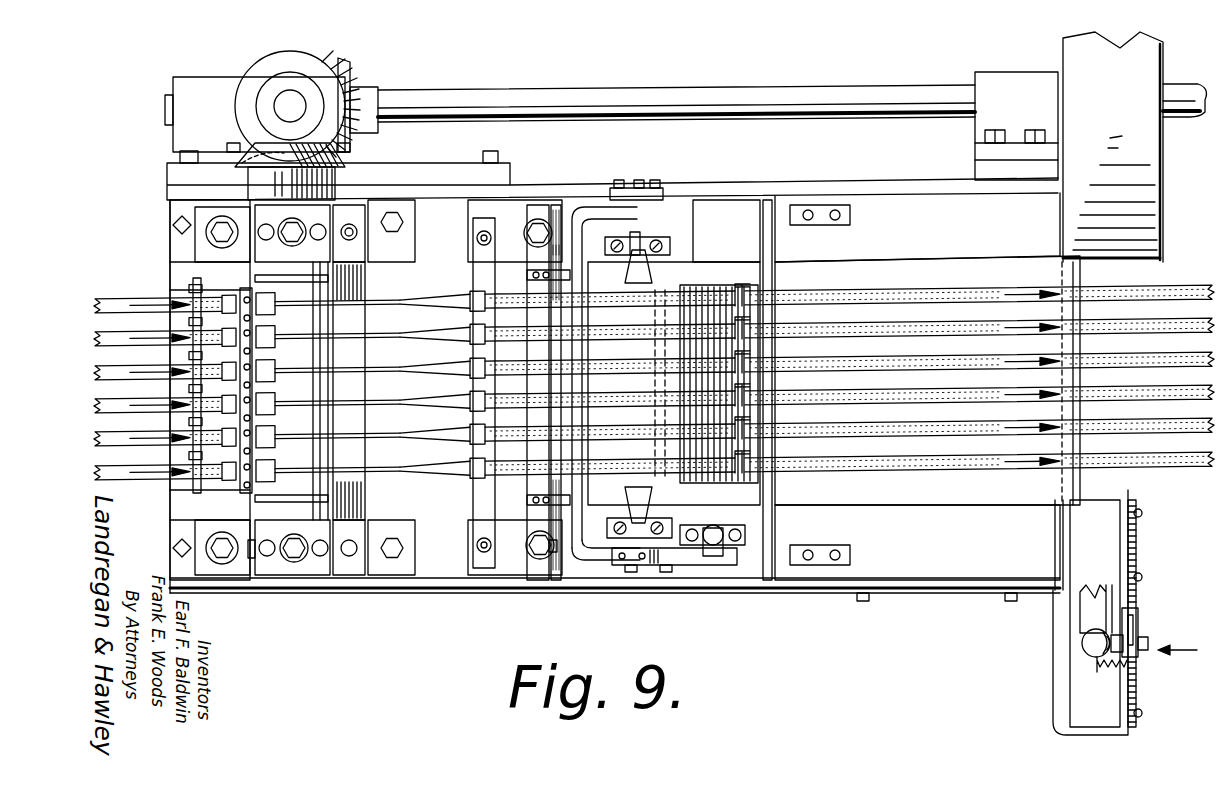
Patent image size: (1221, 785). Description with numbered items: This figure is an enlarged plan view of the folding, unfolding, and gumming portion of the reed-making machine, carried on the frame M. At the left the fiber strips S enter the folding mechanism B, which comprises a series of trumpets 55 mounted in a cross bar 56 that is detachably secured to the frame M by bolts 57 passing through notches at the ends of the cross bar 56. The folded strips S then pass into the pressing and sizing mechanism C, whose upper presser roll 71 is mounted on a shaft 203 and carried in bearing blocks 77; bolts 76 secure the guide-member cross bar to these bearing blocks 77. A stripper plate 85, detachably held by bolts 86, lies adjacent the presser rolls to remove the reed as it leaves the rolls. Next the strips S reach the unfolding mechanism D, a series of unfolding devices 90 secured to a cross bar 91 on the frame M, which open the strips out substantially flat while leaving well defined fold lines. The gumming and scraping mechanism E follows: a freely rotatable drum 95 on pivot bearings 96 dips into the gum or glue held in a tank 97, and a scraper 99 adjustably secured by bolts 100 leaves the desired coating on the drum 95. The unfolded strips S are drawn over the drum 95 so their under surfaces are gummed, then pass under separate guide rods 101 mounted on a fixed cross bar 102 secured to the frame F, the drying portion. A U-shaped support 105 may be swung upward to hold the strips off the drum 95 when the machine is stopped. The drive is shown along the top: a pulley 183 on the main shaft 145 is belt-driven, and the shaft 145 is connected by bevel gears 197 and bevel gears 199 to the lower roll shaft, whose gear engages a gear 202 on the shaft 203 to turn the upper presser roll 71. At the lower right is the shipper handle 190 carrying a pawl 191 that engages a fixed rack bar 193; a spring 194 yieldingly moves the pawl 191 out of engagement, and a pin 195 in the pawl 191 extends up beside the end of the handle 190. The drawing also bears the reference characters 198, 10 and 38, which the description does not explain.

The gear hub shaft 198 is at (293, 40).
The bevel gears 199 is at (313, 66).
The bevel gears 197 is at (352, 67).
The main shaft 145 is at (641, 100).
The pulley 183 is at (1105, 112).
The gear 202 is at (268, 185).
The bearing blocks 77 is at (318, 216).
The bolts 57 is at (212, 232).
The bolts 86 is at (357, 233).
The U-shaped support 105 is at (585, 170).
The pivot bearings 96 is at (642, 246).
The drum 95 is at (700, 300).
The gumming and scraping mechanism E is at (672, 300).
The frame M is at (182, 578).
The fixed cross bar 102 is at (774, 272).
The cross bar 56 is at (240, 300).
The stripper plate 85 is at (345, 268).
The cross bar 91 is at (480, 275).
The unfolding devices 90 is at (475, 358).
The upper presser roll 71 is at (305, 388).
The pressing and sizing mechanism C is at (305, 452).
The guide rods 101 is at (746, 302).
The strips S is at (103, 305).
The material 10 is at (83, 384).
The trumpets 55 is at (238, 478).
The folding mechanism B is at (245, 483).
The unfolding mechanism D is at (487, 495).
The drying portion F is at (1168, 463).
The tank 97 is at (878, 515).
The rack bar 193 is at (1137, 557).
The pawl 191 is at (1135, 614).
The pin 195 is at (1138, 628).
The arrow direction 38 is at (1177, 642).
The shipper handle 190 is at (1088, 644).
The spring 194 is at (1112, 668).
The scraper 99 is at (548, 555).
The bolts 100 is at (556, 556).
The shaft 203 is at (292, 578).
The bolts 76 is at (252, 555).